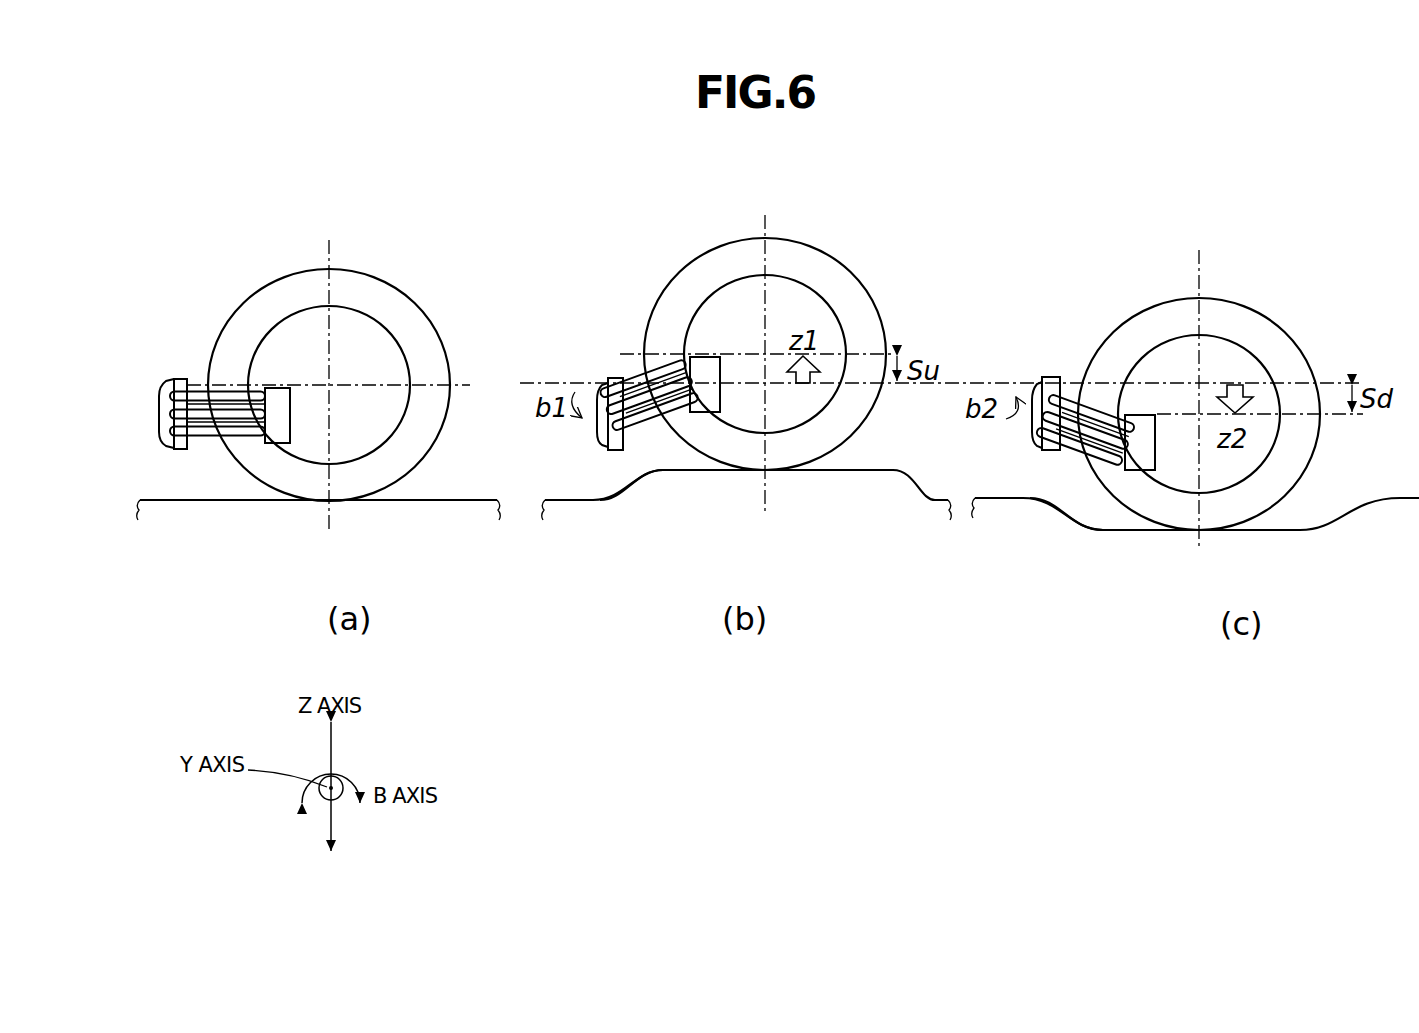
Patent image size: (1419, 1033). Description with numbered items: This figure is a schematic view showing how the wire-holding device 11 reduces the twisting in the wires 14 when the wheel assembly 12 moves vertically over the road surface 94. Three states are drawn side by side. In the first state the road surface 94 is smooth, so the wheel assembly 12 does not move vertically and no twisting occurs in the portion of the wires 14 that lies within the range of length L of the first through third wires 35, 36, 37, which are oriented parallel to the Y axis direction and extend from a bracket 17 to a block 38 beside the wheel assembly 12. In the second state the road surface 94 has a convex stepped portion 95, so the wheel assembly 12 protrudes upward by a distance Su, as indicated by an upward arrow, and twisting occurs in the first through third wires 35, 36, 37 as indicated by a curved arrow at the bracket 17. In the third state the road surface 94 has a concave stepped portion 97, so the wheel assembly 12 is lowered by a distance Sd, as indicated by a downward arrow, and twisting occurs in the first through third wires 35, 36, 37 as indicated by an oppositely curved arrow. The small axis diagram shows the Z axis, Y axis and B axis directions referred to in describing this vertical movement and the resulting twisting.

The wire-holding device 11 is at (128, 360).
The wheel assembly 12 is at (370, 273).
The wires 14 is at (197, 383).
The bracket 17 is at (163, 380).
The first wire 35 is at (232, 388).
The second wire 36 is at (223, 417).
The third wire 37 is at (222, 439).
The nozzle block 38 is at (290, 432).
The road surface 94 is at (157, 498).
The convex stepped portion 95 is at (668, 458).
The concave stepped portion 97 is at (1093, 527).